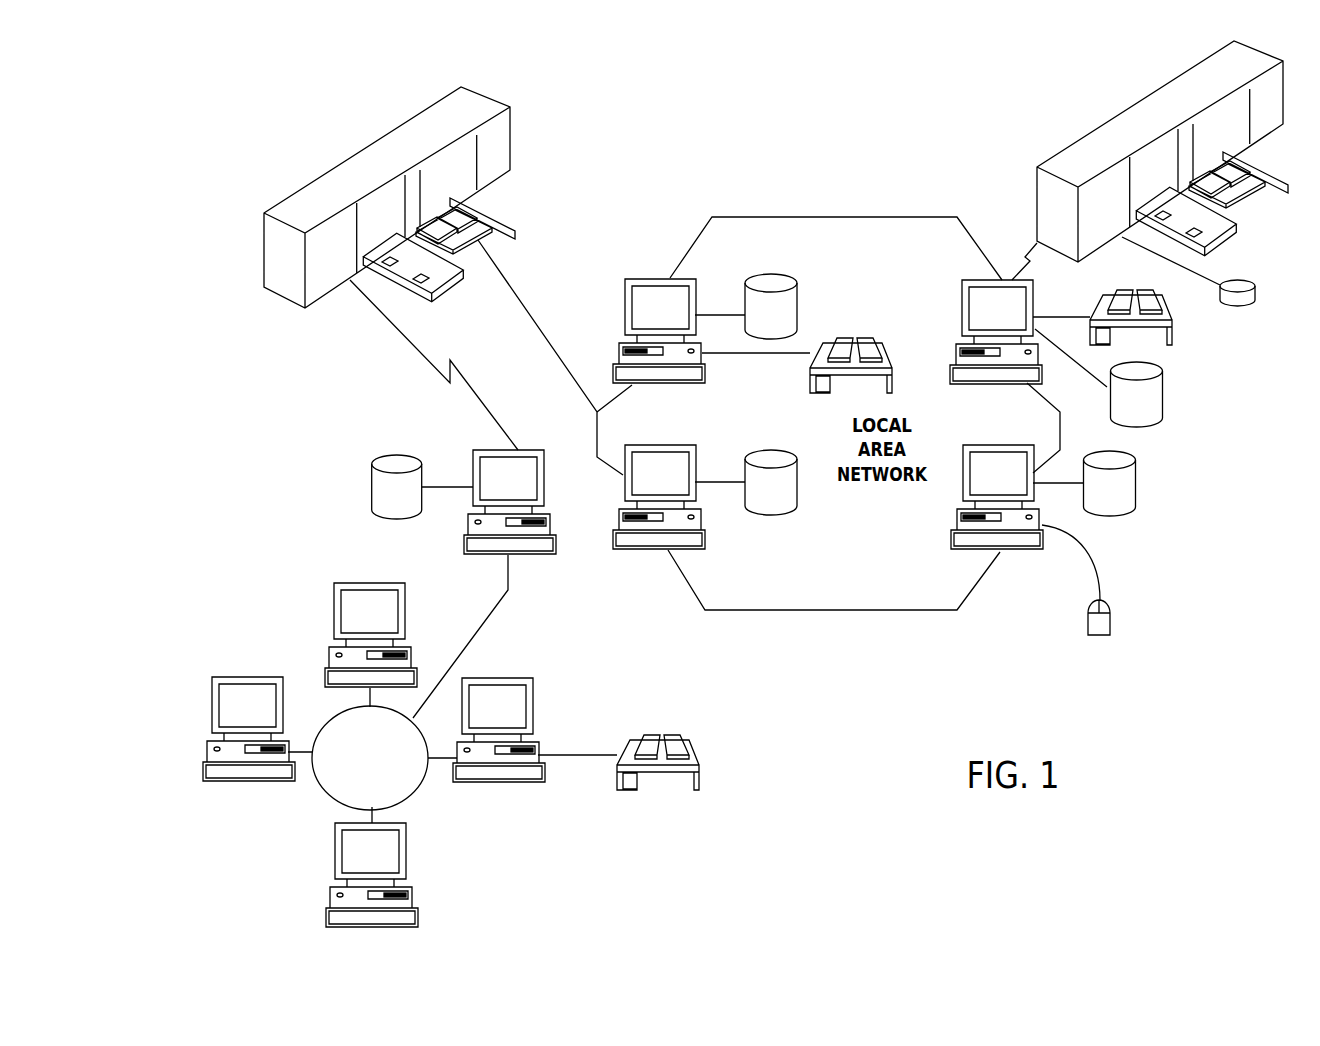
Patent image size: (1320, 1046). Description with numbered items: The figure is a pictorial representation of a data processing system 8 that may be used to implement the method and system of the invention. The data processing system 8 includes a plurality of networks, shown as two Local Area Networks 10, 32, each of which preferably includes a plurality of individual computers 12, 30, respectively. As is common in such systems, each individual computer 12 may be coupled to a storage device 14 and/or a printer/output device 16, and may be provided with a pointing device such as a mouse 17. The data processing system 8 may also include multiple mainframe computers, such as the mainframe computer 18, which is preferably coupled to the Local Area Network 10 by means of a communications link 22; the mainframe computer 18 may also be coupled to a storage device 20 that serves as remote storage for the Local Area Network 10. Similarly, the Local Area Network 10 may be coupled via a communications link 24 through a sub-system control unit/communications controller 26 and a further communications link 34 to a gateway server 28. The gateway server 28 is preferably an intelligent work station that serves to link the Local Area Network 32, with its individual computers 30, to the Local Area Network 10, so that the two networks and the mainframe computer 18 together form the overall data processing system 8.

The data processing system 8 is at (900, 210).
The Local Area Network 10 is at (800, 610).
The individual computers 12 is at (643, 278).
The storage device 14 is at (790, 278).
The printer/output device 16 is at (880, 343).
The mouse 17 is at (1113, 622).
The mainframe computer 18 is at (1122, 116).
The storage device 20 is at (1232, 310).
The communications link 22 is at (1022, 260).
The communications link 24 is at (525, 303).
The sub-system control unit/communications controller 26 is at (327, 173).
The gateway server 28 is at (473, 453).
The individual computers 30 is at (333, 605).
The Local Area Network 32 is at (317, 790).
The communications link 34 is at (377, 325).